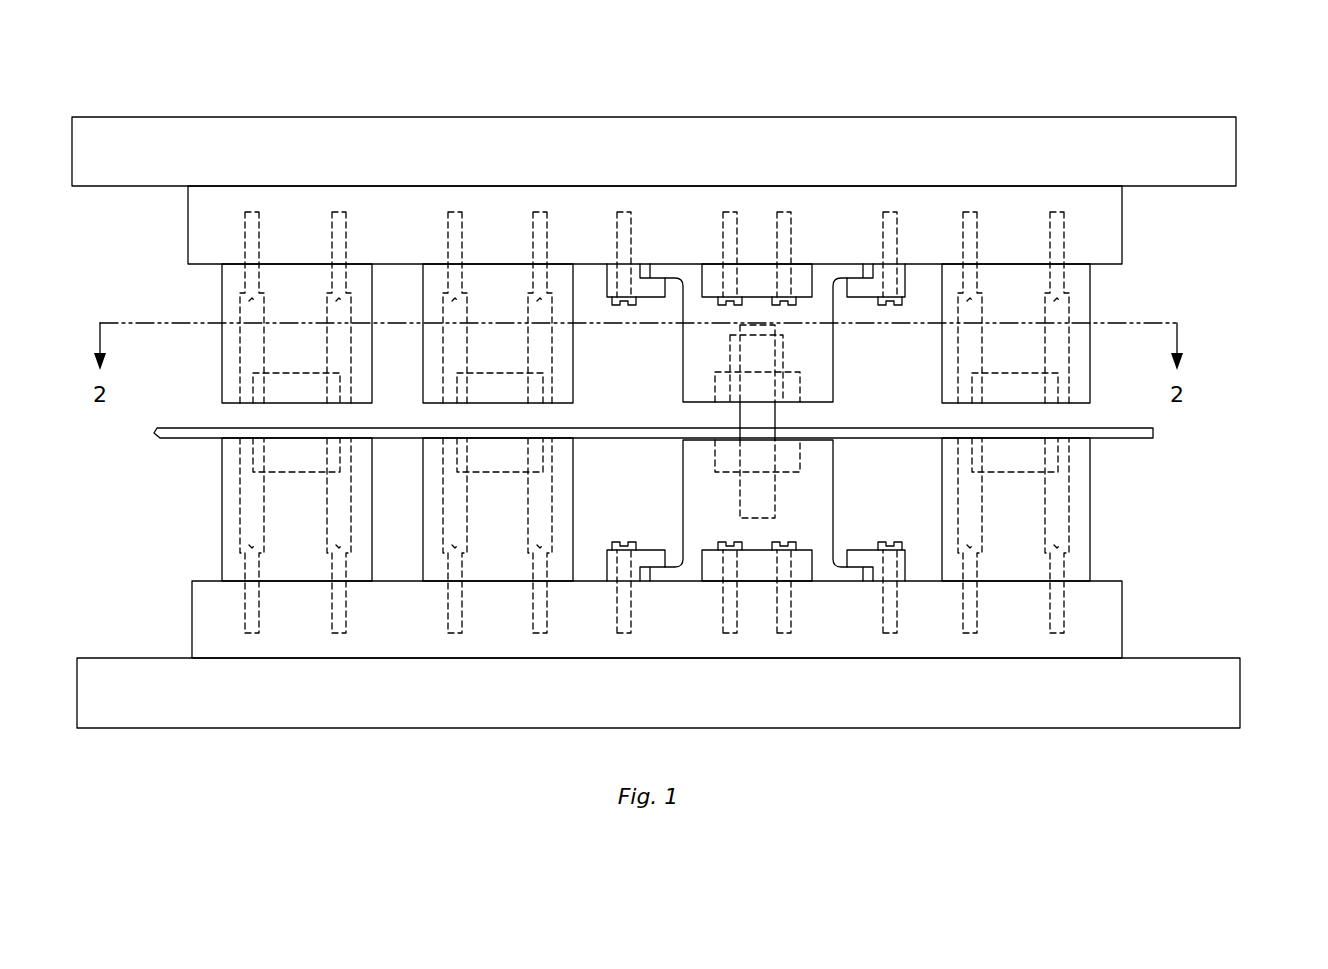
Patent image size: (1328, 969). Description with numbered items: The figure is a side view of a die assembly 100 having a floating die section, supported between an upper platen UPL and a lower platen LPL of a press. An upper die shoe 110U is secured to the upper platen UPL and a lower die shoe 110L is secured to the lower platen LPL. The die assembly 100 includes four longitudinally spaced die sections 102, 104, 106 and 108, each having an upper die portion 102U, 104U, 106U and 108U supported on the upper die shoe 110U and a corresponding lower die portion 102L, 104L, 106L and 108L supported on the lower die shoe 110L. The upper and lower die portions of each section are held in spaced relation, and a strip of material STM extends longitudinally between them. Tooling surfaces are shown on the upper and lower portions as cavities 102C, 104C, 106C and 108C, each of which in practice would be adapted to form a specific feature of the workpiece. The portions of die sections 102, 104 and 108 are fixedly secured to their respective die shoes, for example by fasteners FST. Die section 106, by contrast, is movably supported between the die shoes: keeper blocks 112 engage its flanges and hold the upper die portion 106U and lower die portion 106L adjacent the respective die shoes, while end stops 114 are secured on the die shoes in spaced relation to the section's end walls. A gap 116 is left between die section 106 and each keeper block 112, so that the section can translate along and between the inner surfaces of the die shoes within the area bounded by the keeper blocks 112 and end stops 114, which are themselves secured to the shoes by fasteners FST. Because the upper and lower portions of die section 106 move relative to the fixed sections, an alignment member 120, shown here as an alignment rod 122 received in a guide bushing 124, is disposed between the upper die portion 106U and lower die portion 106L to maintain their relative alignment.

The die assembly 100 is at (1242, 250).
The die section 102 is at (237, 327).
The upper die portion 102U is at (222, 300).
The lower die portion 102L is at (222, 512).
The cavity 102C is at (238, 422).
The die section 104 is at (550, 327).
The upper die portion 104U is at (573, 338).
The lower die portion 104L is at (573, 515).
The cavity 104C is at (567, 422).
The die section 106 is at (771, 317).
The upper die portion 106U is at (833, 371).
The lower die portion 106L is at (833, 449).
The cavity 106C is at (785, 430).
The die section 108 is at (1076, 327).
The upper die portion 108U is at (1091, 297).
The lower die portion 108L is at (1091, 556).
The cavity 108C is at (1040, 455).
The upper die shoe 110U is at (421, 224).
The lower die shoe 110L is at (395, 632).
The keeper block 112 is at (755, 429).
The end stop 114 is at (757, 270).
The gap 116 is at (644, 272).
The alignment member 120 is at (738, 417).
The alignment rod 122 is at (783, 520).
The guide bushing 124 is at (730, 350).
The upper platen UPL is at (1156, 117).
The lower platen LPL is at (469, 697).
The strip of material STM is at (186, 444).
The fastener FST is at (245, 232).